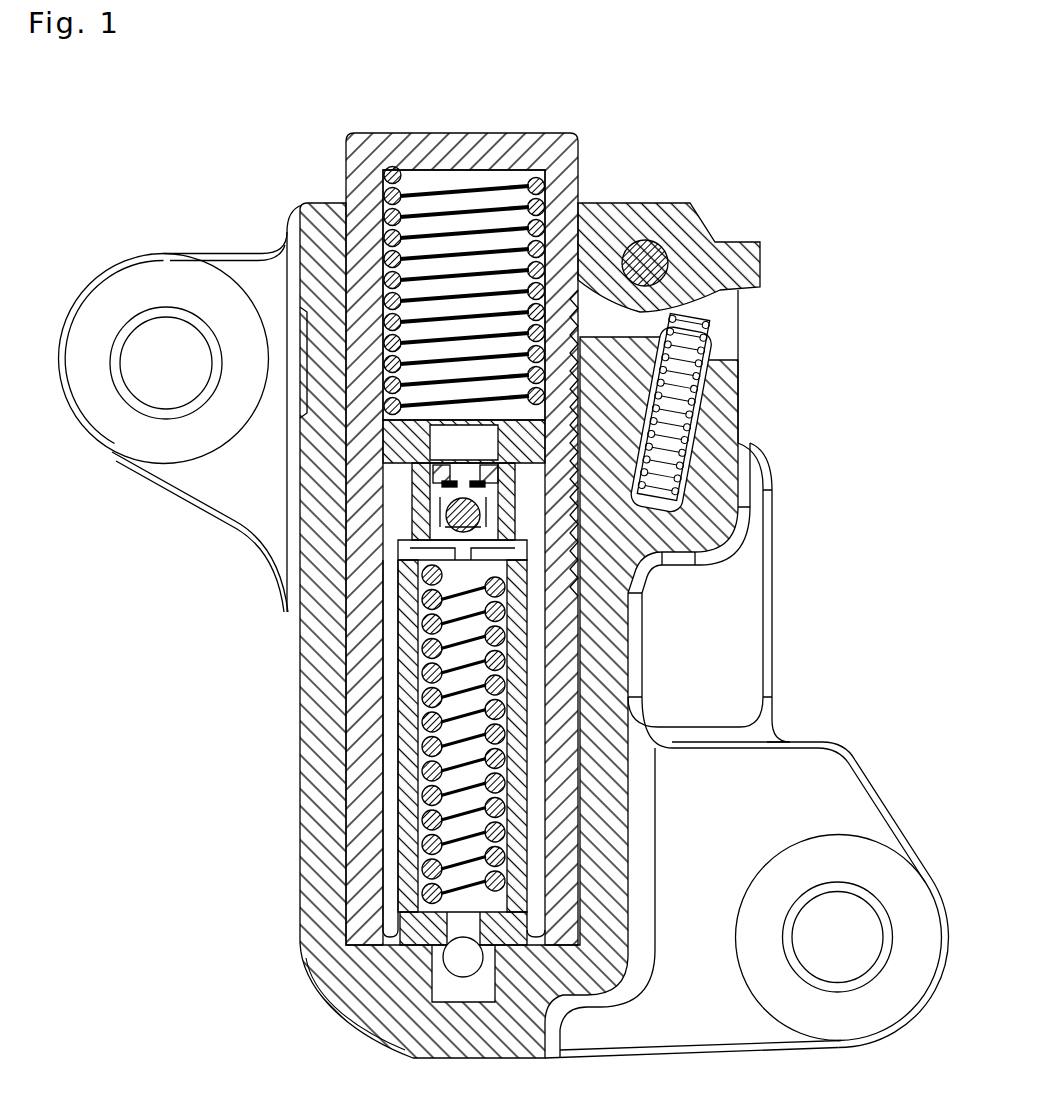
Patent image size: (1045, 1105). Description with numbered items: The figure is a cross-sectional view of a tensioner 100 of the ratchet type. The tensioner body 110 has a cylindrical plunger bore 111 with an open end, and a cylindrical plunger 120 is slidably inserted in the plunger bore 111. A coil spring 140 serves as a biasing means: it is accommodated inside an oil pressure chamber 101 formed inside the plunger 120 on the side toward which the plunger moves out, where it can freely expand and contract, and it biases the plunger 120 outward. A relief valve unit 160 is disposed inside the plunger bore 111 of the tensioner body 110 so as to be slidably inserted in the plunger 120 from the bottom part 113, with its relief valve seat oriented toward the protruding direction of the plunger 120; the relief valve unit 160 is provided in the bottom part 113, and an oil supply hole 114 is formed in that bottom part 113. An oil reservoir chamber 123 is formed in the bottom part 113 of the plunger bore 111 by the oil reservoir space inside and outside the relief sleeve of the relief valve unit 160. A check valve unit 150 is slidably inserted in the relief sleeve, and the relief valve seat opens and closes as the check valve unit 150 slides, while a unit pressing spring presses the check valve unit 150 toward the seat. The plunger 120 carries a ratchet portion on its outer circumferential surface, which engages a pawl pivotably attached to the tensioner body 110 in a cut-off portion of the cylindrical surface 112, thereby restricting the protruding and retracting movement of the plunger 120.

The tensioner 100 is at (168, 158).
The oil pressure chamber 101 is at (470, 240).
The tensioner body 110 is at (298, 648).
The plunger bore 111 is at (180, 866).
The cylindrical surface 112 is at (385, 800).
The bottom part 113 is at (352, 897).
The oil supply hole 114 is at (460, 967).
The plunger 120 is at (345, 178).
The oil reservoir chamber 123 is at (387, 677).
The coil spring 140 is at (385, 362).
The check valve unit 150 is at (505, 515).
The relief valve unit 160 is at (603, 603).